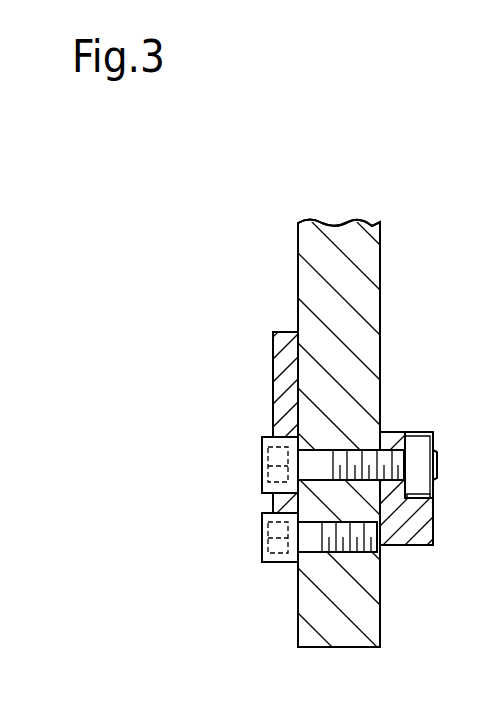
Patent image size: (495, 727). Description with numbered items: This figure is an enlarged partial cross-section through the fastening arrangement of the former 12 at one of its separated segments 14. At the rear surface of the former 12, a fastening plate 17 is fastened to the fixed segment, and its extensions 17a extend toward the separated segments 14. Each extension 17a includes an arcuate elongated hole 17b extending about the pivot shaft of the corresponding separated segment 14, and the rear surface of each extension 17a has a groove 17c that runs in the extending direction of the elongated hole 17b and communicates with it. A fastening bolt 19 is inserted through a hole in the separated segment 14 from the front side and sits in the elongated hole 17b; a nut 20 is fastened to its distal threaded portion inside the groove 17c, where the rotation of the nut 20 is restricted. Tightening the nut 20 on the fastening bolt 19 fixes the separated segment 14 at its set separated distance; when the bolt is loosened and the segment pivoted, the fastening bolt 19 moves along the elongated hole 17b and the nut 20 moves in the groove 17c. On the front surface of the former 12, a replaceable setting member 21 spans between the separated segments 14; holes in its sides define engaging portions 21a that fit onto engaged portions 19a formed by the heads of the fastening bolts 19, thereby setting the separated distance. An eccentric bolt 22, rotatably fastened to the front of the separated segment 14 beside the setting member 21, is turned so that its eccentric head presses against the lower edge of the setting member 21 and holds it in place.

The former 12 is at (443, 261).
The separated segment 14 is at (383, 302).
The fastening plate 17 is at (430, 518).
The extension 17a is at (408, 543).
The arcuate elongated hole 17b is at (395, 448).
The groove 17c is at (425, 495).
The fastening bolt 19 is at (262, 463).
The engaged portion 19a is at (262, 480).
The nut 20 is at (430, 440).
The setting member 21 is at (273, 372).
The engaging portion 21a is at (270, 437).
The eccentric bolt 22 is at (262, 533).